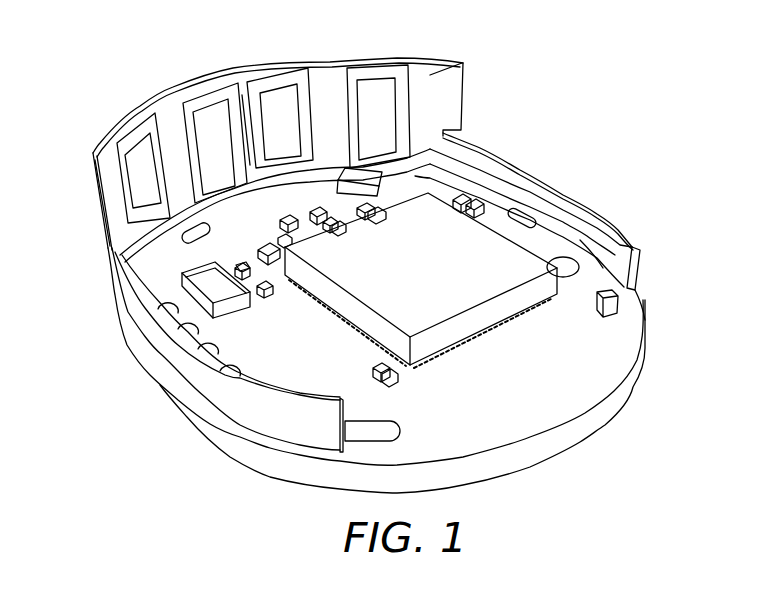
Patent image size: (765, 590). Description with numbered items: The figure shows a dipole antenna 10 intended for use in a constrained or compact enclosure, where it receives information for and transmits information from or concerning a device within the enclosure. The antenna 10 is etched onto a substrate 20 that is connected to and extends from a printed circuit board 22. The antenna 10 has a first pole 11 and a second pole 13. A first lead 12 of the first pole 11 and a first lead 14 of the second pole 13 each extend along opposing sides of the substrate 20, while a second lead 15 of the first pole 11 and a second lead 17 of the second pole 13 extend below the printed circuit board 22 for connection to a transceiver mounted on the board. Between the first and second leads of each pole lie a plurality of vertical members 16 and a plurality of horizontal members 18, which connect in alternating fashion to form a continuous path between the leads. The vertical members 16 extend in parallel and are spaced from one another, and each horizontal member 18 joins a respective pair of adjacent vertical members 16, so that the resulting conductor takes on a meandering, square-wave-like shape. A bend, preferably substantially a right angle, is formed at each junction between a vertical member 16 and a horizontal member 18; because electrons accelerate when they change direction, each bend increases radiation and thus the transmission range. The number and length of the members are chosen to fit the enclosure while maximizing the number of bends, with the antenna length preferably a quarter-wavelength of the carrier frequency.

The dipole antenna 10 is at (241, 77).
The first pole 11 is at (519, 186).
The first lead 12 is at (558, 205).
The second pole 13 is at (121, 219).
The first lead 14 is at (120, 253).
The second lead 15 is at (258, 157).
The vertical members 16 is at (125, 167).
The second lead 17 is at (237, 166).
The horizontal members 18 is at (137, 133).
The substrate 20 is at (447, 87).
The printed circuit board 22 is at (596, 266).